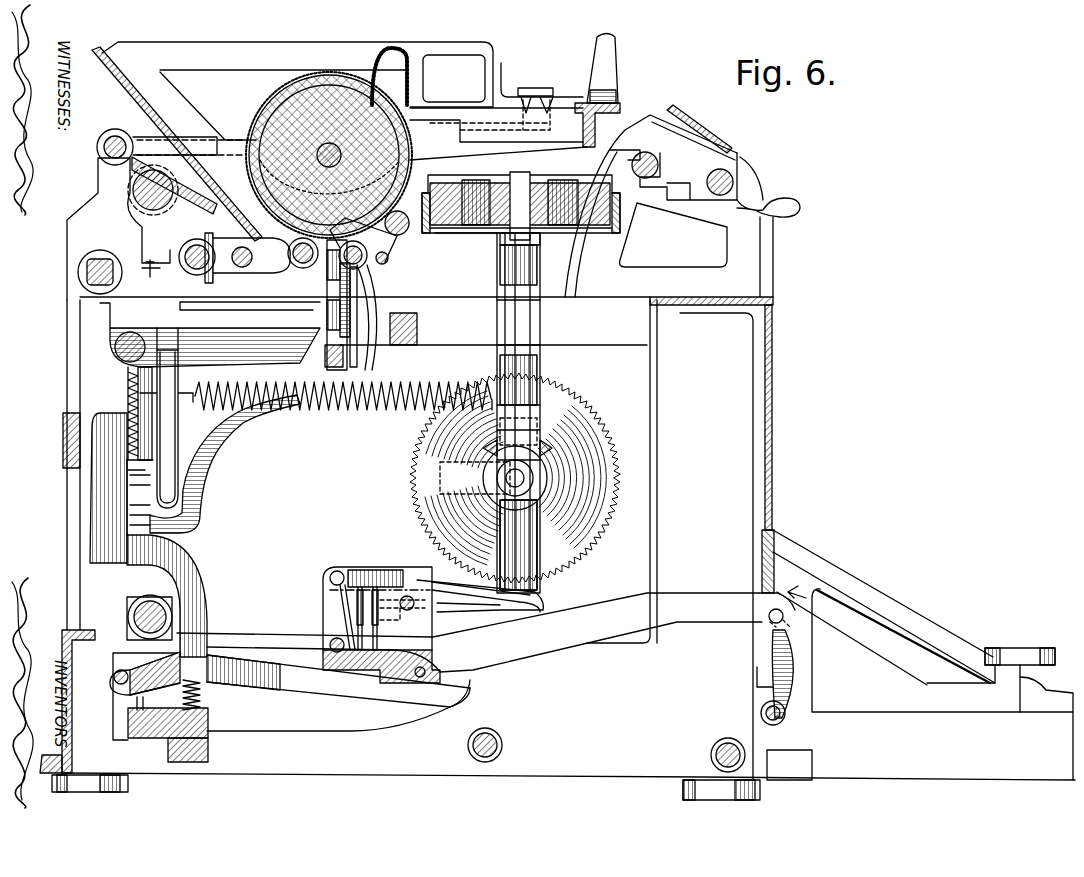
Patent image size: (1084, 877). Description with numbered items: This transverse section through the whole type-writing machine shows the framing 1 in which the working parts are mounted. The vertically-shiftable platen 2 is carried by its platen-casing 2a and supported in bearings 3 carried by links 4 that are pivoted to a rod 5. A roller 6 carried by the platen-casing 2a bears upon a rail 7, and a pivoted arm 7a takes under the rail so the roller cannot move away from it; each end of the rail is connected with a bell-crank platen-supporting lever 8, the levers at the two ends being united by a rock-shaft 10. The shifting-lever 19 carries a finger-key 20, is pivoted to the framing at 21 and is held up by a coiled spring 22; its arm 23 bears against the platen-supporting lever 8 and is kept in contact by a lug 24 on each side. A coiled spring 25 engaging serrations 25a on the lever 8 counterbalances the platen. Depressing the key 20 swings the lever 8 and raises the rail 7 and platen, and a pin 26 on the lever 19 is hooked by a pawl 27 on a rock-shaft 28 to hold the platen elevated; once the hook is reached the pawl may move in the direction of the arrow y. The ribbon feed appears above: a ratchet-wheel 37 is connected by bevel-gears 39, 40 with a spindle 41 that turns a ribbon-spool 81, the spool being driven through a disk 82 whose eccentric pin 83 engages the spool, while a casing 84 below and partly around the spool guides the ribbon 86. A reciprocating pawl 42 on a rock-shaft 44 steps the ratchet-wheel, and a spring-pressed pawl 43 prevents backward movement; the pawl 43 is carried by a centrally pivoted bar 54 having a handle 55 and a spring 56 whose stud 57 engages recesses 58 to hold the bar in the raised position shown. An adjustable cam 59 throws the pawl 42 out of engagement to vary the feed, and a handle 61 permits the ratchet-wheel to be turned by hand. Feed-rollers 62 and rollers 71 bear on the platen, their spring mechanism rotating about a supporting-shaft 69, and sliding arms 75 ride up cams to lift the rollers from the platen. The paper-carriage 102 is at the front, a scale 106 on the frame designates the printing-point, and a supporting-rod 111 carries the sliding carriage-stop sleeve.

The framing 1 is at (732, 256).
The platen 2 is at (305, 80).
The platen-casing 2a is at (220, 42).
The bearings 3 is at (329, 155).
The links 4 is at (148, 150).
The rod 5 is at (115, 127).
The roller 6 is at (330, 278).
The rail 7 is at (325, 355).
The pivoted arm 7a is at (362, 358).
The platen-supporting lever 8 is at (190, 518).
The rock-shaft 10 is at (118, 358).
The shifting-lever 19 is at (486, 632).
The finger-key 20 is at (1020, 644).
The pivot 21 is at (115, 675).
The coiled spring 22 is at (202, 696).
The arm 23 is at (118, 522).
The lug 24 is at (135, 475).
The coiled spring 25 is at (335, 413).
The serrations 25a is at (140, 394).
The pin 26 is at (768, 622).
The pawl 27 is at (800, 683).
The rock-shaft 28 is at (782, 720).
The ratchet-wheel 37 is at (572, 402).
The bevel-gear 39 is at (498, 495).
The bevel-gear 40 is at (548, 448).
The spindle 41 is at (530, 330).
The reciprocating pawl 42 is at (480, 585).
The non-reciprocating pawl 43 is at (548, 600).
The rock-shaft 44 is at (335, 640).
The bar 54 is at (387, 620).
The handle 55 is at (340, 568).
The spring 56 is at (370, 587).
The stud 57 is at (355, 605).
The recesses 58 is at (365, 665).
The cam 59 is at (540, 540).
The handle 61 is at (605, 438).
The feed-rollers 62 is at (228, 268).
The supporting-shaft 69 is at (356, 248).
The rollers 71 is at (390, 256).
The sliding arms 75 is at (370, 290).
The ribbon-spool 81 is at (540, 176).
The disk 82 is at (500, 240).
The pin 83 is at (490, 237).
The ribbon-spool casing 84 is at (480, 227).
The ribbon 86 is at (460, 190).
The paper-carriage 102 is at (612, 100).
The scale 106 is at (700, 115).
The supporting-rod 111 is at (745, 170).
The arrow y is at (797, 597).